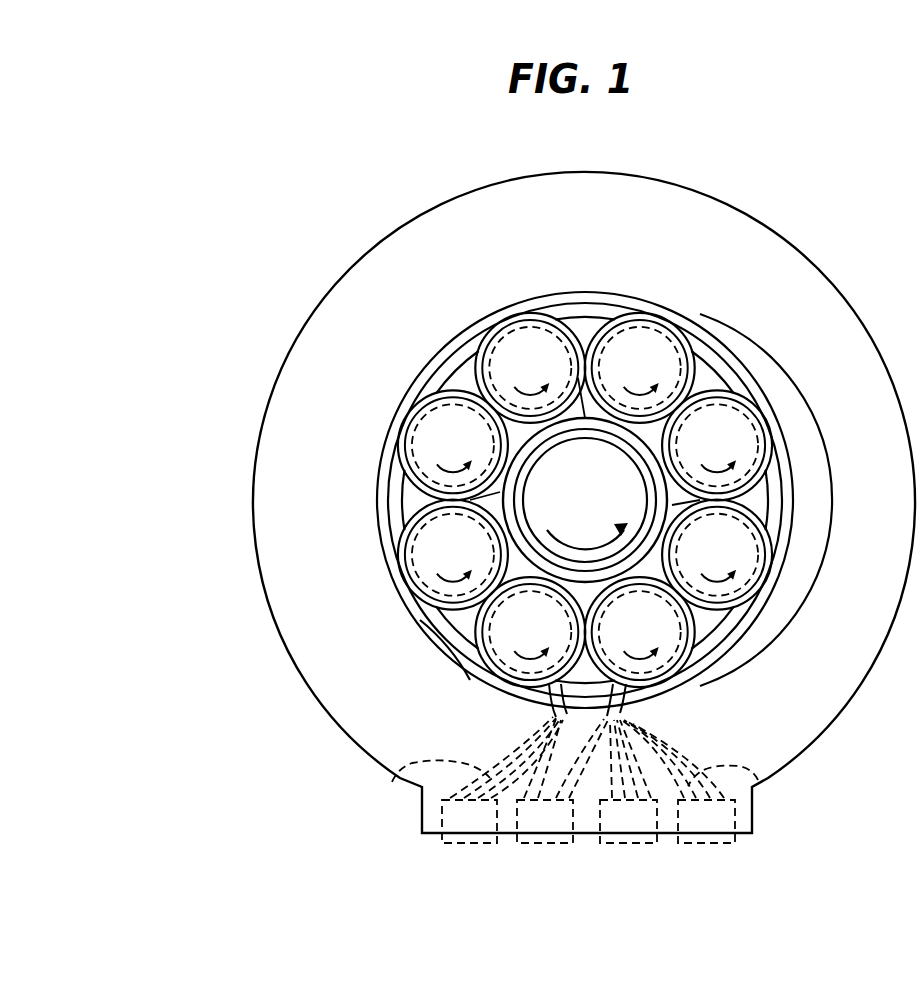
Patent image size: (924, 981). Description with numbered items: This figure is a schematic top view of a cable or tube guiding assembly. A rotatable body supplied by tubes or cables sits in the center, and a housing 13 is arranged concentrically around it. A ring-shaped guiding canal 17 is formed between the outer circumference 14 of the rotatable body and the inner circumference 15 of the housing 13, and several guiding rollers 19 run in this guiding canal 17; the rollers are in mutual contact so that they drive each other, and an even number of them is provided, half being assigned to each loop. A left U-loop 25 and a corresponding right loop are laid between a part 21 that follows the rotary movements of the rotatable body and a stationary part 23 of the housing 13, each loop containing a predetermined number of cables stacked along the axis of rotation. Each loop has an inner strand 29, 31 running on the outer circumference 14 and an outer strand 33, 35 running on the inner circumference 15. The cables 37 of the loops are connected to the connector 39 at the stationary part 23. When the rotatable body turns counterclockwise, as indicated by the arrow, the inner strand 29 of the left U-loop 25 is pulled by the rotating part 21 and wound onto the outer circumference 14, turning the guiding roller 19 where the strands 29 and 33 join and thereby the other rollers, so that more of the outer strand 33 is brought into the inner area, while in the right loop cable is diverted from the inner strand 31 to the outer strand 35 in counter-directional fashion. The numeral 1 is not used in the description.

The sun gear / central shaft 1 is at (610, 467).
The housing 13 is at (762, 252).
The outer circumference 14 is at (578, 378).
The inner circumference 15 is at (527, 298).
The guiding canal 17 is at (598, 312).
The guiding rollers 19 is at (429, 438).
The part following the rotatory movements 21 is at (652, 645).
The stationary part 23 is at (551, 697).
The left U-loop 25 is at (393, 515).
The inner strand 29 is at (500, 492).
The inner strand 31 is at (672, 505).
The outer strand 33 is at (447, 622).
The outer strand 35 is at (778, 505).
The cables 37 is at (392, 782).
The connector 39 is at (466, 845).